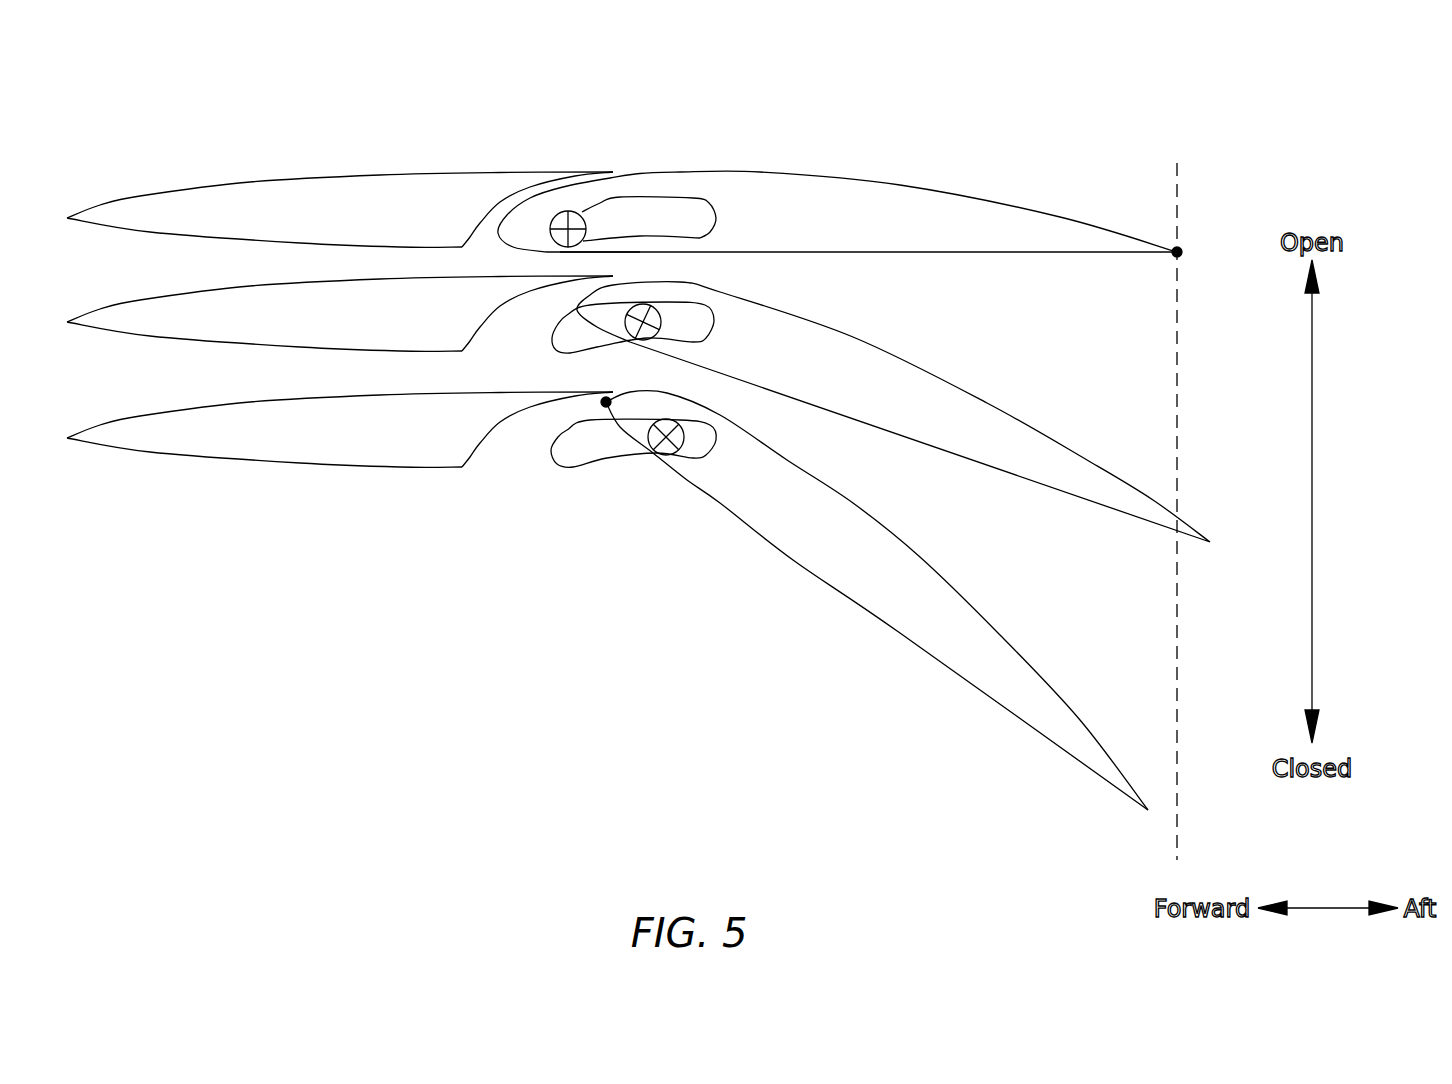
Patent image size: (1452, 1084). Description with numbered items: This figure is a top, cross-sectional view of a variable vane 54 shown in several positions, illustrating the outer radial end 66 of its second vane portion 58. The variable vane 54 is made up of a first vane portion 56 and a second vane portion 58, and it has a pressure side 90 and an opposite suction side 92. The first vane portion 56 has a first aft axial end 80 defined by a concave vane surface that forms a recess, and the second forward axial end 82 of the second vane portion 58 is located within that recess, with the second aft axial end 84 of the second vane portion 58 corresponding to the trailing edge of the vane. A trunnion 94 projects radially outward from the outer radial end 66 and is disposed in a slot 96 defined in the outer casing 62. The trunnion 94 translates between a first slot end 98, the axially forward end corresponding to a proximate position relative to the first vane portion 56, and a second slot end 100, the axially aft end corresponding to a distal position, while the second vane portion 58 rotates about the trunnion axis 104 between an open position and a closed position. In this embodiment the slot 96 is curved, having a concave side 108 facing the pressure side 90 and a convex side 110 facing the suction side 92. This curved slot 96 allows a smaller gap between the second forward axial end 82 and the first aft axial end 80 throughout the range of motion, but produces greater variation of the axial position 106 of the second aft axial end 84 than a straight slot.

The variable vane 54 is at (875, 157).
The first vane portion 56 is at (317, 162).
The second vane portion 58 is at (980, 188).
The outer casing 62 is at (602, 460).
The outer radial end 66 is at (772, 207).
The first aft axial end 80 is at (506, 422).
The second forward axial end 82 is at (606, 400).
The second aft axial end 84 is at (1183, 250).
The pressure side 90 is at (577, 257).
The suction side 92 is at (583, 148).
The trunnion 94 is at (581, 213).
The slot 96 is at (617, 442).
The first slot end 98 is at (540, 462).
The second slot end 100 is at (723, 450).
The trunnion axis 104 is at (553, 211).
The axial position 106 is at (1177, 750).
The concave side 108 is at (640, 236).
The convex side 110 is at (648, 193).